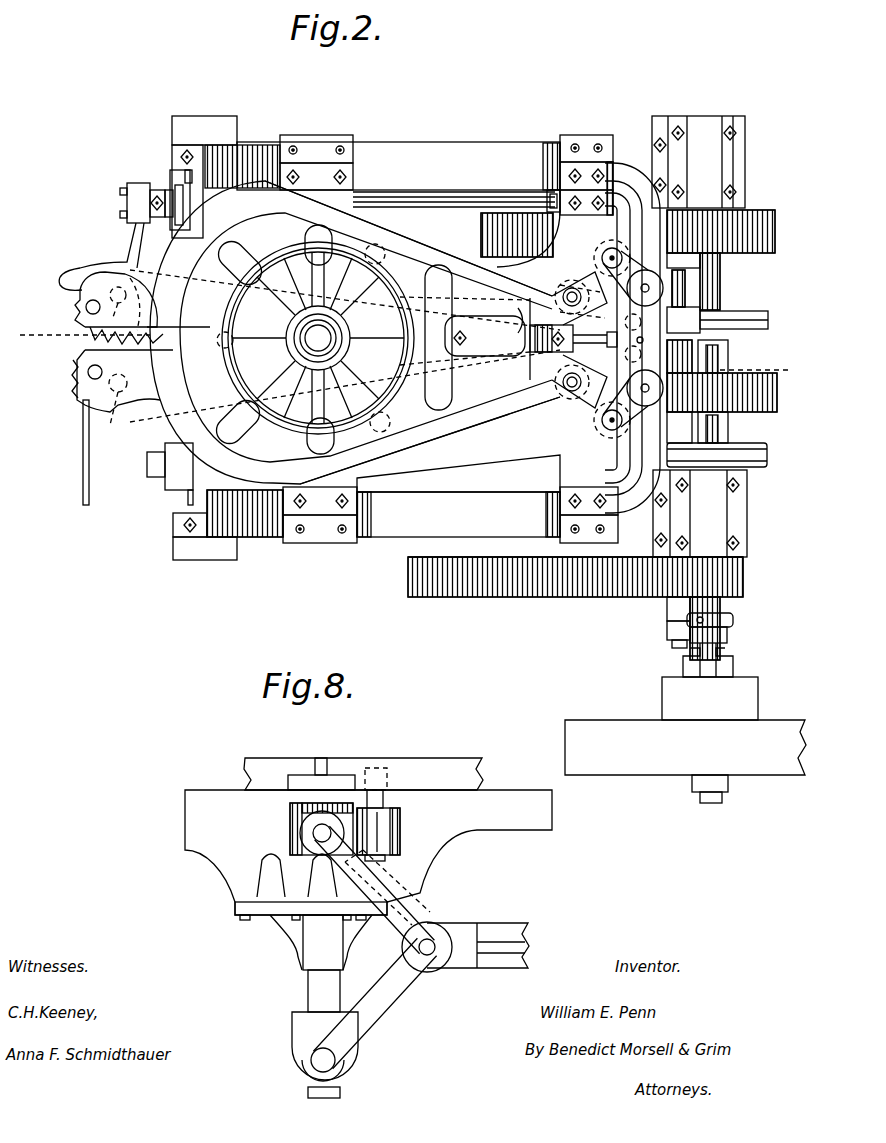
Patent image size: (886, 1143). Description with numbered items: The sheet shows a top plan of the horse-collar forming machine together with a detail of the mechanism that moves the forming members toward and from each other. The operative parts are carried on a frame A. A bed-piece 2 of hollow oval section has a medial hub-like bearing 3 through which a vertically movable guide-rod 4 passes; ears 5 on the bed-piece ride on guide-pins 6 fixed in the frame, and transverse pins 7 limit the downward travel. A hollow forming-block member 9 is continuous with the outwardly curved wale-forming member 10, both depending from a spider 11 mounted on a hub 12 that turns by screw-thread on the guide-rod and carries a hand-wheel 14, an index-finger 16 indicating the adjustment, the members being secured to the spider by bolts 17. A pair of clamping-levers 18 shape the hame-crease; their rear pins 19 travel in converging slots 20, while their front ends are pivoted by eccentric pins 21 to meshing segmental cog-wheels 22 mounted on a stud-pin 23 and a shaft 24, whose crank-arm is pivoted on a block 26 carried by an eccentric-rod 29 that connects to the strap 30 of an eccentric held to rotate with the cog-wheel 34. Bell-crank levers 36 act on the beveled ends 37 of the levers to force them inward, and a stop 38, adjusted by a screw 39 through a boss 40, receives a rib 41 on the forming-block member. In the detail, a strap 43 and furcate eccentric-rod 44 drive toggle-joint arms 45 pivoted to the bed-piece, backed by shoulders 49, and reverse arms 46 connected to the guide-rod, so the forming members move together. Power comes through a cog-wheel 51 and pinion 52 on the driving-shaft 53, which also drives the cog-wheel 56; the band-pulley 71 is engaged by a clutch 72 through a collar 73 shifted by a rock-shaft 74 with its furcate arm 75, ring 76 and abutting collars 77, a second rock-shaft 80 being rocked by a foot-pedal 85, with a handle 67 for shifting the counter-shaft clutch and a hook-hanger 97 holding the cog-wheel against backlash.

In FIG. 2, the frame A is at (436, 142).
In FIG. 8, the frame A is at (465, 758).
In FIG. 8, the bed-piece 2 is at (222, 860).
In FIG. 2, the hub-like bearing 3 is at (406, 346).
In FIG. 2, the guide-rod 4 is at (318, 338).
In FIG. 8, the guide-rod 4 is at (308, 985).
In FIG. 8, the ears 5 is at (400, 822).
In FIG. 2, the guide-pins 6 is at (385, 258).
In FIG. 8, the guide-pins 6 is at (388, 801).
In FIG. 8, the pins 7 is at (386, 856).
In FIG. 2, the forming-block member 9 is at (510, 325).
In FIG. 2, the wale-forming member 10 is at (195, 304).
In FIG. 2, the spider 11 is at (445, 262).
In FIG. 2, the hub 12 is at (356, 340).
In FIG. 2, the hand-wheel 14 is at (276, 258).
In FIG. 2, the index-finger 16 is at (290, 346).
In FIG. 2, the bolts 17 is at (475, 337).
In FIG. 2, the clamping-levers 18 is at (420, 238).
In FIG. 2, the pins 19 is at (565, 288).
In FIG. 2, the slots 20 is at (436, 294).
In FIG. 2, the pins 21 is at (86, 307).
In FIG. 2, the segmental cog-wheels 22 is at (140, 336).
In FIG. 2, the stud-pin 23 is at (115, 290).
In FIG. 2, the shaft 24 is at (113, 409).
In FIG. 2, the block 26 is at (170, 478).
In FIG. 2, the eccentric-rod 29 is at (490, 462).
In FIG. 2, the strap 30 is at (764, 462).
In FIG. 2, the cog-wheel 34 is at (774, 408).
In FIG. 2, the bell-crank levers 36 is at (606, 252).
In FIG. 2, the beveled ends 37 is at (600, 280).
In FIG. 2, the stop 38 is at (540, 360).
In FIG. 2, the screw 39 is at (582, 303).
In FIG. 2, the boss 40 is at (595, 343).
In FIG. 2, the rib 41 is at (551, 339).
In FIG. 2, the strap 43 is at (760, 330).
In FIG. 8, the eccentric-rod 44 is at (502, 926).
In FIG. 8, the toggle-joint arms 45 is at (425, 905).
In FIG. 8, the toggle-joint arms 46 is at (405, 985).
In FIG. 8, the shoulders 49 is at (290, 815).
In FIG. 2, the cog-wheel 51 is at (534, 590).
In FIG. 2, the pinion 52 is at (743, 578).
In FIG. 2, the driving-shaft 53 is at (722, 606).
In FIG. 2, the cog-wheel 56 is at (775, 236).
In FIG. 2, the handle 67 is at (75, 275).
In FIG. 2, the band-pulley 71 is at (604, 726).
In FIG. 2, the clutch 72 is at (735, 668).
In FIG. 2, the collar 73 is at (730, 637).
In FIG. 2, the rock-shaft 74 is at (672, 646).
In FIG. 2, the furcate arm 75 is at (667, 611).
In FIG. 2, the ring 76 is at (735, 621).
In FIG. 2, the collars 77 is at (667, 632).
In FIG. 2, the rock-shaft 80 is at (496, 230).
In FIG. 2, the foot-pedal 85 is at (83, 455).
In FIG. 2, the hook-hanger 97 is at (548, 196).